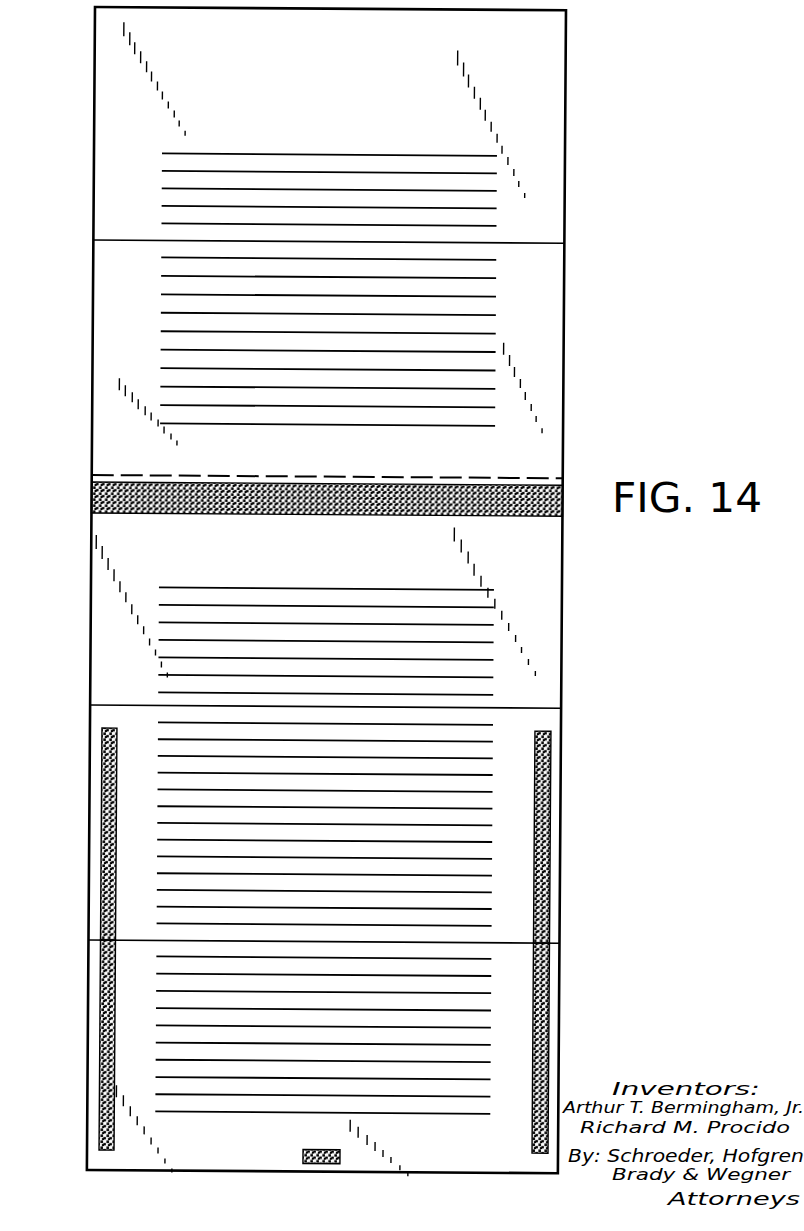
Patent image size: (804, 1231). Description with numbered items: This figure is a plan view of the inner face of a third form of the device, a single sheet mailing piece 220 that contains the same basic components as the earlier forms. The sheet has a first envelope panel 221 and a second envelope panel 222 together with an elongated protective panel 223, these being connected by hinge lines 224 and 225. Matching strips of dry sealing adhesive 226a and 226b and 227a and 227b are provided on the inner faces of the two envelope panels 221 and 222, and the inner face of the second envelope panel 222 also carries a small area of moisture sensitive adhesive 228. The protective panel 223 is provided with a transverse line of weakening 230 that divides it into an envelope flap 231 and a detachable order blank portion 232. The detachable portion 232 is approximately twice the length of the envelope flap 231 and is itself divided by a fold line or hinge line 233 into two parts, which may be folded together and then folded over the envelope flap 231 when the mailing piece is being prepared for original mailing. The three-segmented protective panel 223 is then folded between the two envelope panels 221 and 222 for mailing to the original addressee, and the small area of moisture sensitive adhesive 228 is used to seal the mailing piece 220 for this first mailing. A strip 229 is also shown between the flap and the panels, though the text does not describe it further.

The single sheet mailing piece 220 is at (590, 152).
The fold line or hinge line 233 is at (566, 243).
The detachable order blank portion 232 is at (550, 291).
The elongated protective panel 223 is at (569, 390).
The transverse line of weakening 230 is at (558, 477).
The adhesive strip 229 is at (567, 503).
The envelope flap 231 is at (548, 575).
The hinge line 225 is at (555, 709).
The first envelope panel 221 is at (560, 752).
The strip of dry sealing adhesive 227a is at (540, 806).
The strip of dry sealing adhesive 226a is at (110, 780).
The hinge line 224 is at (558, 943).
The second envelope panel 222 is at (553, 970).
The strip of dry sealing adhesive 227b is at (540, 1015).
The strip of dry sealing adhesive 226b is at (108, 988).
The small area of moisture sensitive adhesive 228 is at (302, 1157).